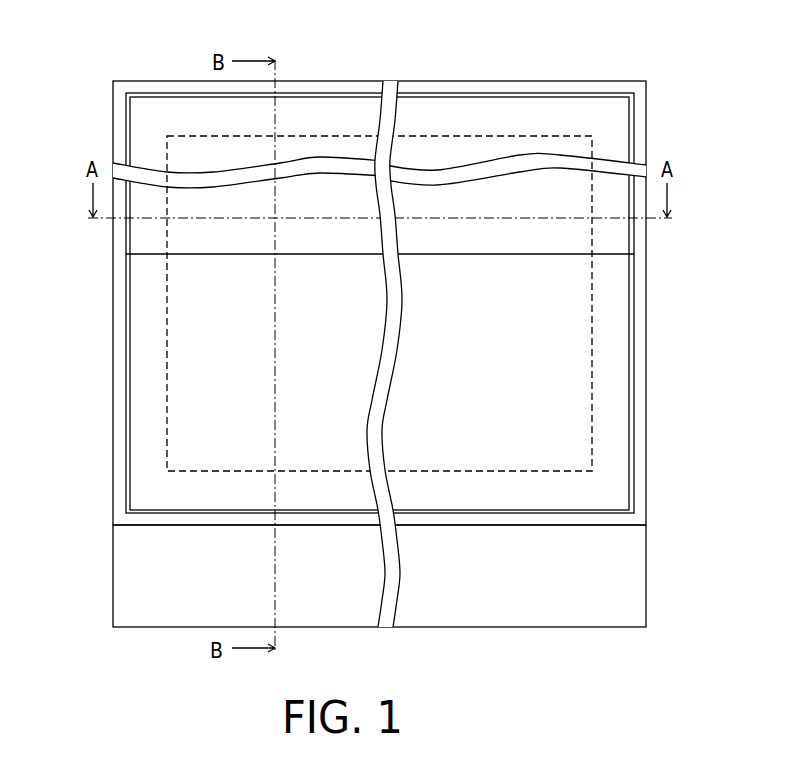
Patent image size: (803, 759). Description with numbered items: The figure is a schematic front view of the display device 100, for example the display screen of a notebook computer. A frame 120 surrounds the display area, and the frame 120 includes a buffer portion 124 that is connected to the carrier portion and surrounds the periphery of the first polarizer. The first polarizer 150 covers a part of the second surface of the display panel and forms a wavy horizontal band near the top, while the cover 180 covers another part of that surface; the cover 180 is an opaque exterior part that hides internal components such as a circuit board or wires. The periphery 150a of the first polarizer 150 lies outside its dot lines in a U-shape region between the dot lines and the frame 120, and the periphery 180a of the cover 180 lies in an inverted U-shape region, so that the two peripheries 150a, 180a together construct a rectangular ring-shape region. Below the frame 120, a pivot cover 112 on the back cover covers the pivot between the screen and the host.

The display device 100 is at (756, 680).
The pivot cover 112 is at (138, 579).
The frame 120 is at (378, 272).
The buffer portion 124 is at (172, 90).
The first polarizer 150 is at (343, 104).
The periphery of the first polarizer 150a is at (338, 116).
The cover 180 is at (196, 357).
The periphery of the cover 180a is at (170, 487).